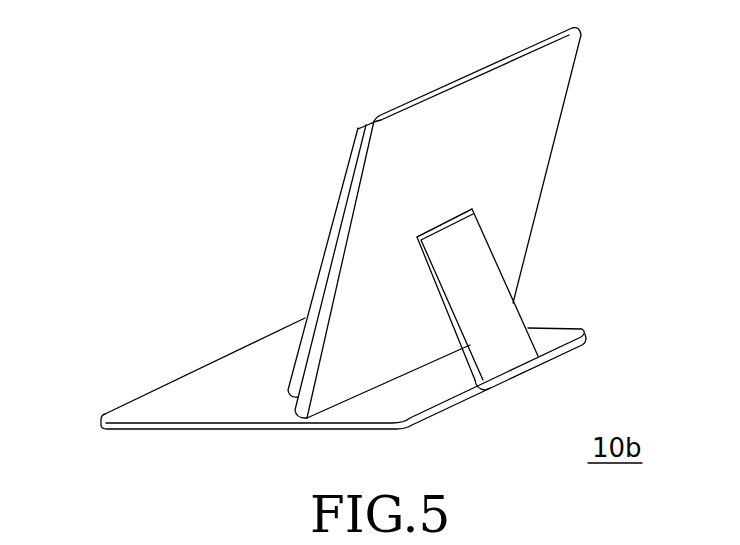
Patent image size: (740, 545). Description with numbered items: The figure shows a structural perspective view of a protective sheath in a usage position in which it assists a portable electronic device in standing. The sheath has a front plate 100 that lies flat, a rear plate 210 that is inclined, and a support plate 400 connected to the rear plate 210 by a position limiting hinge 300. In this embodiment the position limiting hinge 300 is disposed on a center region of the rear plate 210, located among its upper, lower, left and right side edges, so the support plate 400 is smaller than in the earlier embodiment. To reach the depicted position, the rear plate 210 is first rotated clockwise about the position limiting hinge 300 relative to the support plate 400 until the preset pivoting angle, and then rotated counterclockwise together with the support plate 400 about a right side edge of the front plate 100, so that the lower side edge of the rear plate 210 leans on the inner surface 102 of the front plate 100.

The front plate 100 is at (134, 428).
The inner surface 102 is at (161, 408).
The rear plate 210 is at (535, 116).
The position limiting hinge 300 is at (417, 237).
The support plate 400 is at (522, 308).